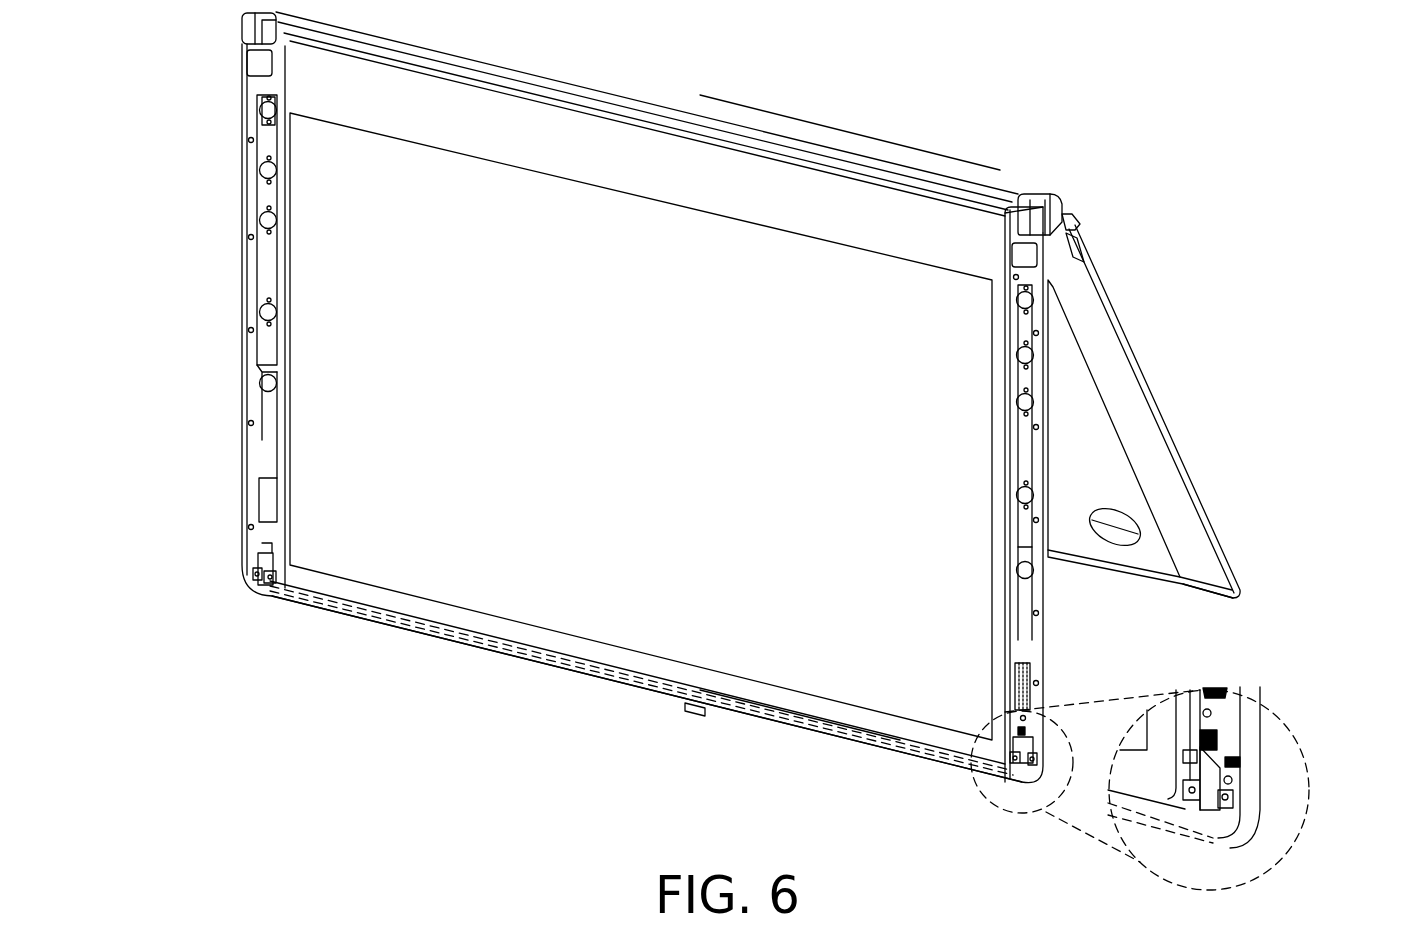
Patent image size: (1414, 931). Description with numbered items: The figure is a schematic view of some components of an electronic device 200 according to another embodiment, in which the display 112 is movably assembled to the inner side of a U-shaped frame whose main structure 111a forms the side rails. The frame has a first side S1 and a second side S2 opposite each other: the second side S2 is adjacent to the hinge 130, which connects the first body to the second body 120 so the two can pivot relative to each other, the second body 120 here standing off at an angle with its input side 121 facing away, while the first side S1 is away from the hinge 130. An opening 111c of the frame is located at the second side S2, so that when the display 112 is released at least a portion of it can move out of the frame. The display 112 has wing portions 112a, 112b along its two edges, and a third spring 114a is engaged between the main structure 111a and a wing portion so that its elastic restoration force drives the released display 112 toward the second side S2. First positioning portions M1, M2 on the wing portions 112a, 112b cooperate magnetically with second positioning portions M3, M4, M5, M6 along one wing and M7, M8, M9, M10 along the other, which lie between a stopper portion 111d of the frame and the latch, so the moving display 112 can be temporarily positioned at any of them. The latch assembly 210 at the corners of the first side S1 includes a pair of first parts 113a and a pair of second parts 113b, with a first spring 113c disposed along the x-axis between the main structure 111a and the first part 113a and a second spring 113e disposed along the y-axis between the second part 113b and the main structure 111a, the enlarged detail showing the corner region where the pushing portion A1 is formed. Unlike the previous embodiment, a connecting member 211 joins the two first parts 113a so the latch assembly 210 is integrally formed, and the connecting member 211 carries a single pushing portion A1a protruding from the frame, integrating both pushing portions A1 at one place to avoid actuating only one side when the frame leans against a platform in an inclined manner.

The electronic device 200 is at (105, 864).
The display 112 is at (727, 180).
The second side S2 is at (877, 126).
The first side S1 is at (820, 766).
The main structure 111a is at (242, 193).
The opening 111c is at (1020, 198).
The stopper portion 111d is at (276, 104).
The wing portion 112a is at (1018, 640).
The wing portion 112b is at (265, 445).
The third spring 114a is at (1031, 670).
The second body 120 is at (1217, 593).
The input side 121 is at (1158, 384).
The hinge 130 is at (1044, 205).
The latch assembly 210 is at (198, 715).
The connecting member 211 is at (567, 672).
The first part 113a is at (1210, 775).
The second part 113b is at (1240, 762).
The first spring 113c is at (1217, 738).
The second spring 113e is at (1232, 782).
The pushing portion A1 is at (266, 588).
The pushing portion A1a is at (697, 724).
The first positioning portion M1 is at (1016, 572).
The first positioning portion M2 is at (259, 383).
The second positioning portion M3 is at (1016, 495).
The second positioning portion M4 is at (1016, 402).
The second positioning portion M5 is at (1016, 355).
The second positioning portion M6 is at (1016, 300).
The second positioning portion M7 is at (259, 312).
The second positioning portion M8 is at (259, 220).
The second positioning portion M9 is at (259, 170).
The second positioning portion M10 is at (259, 112).